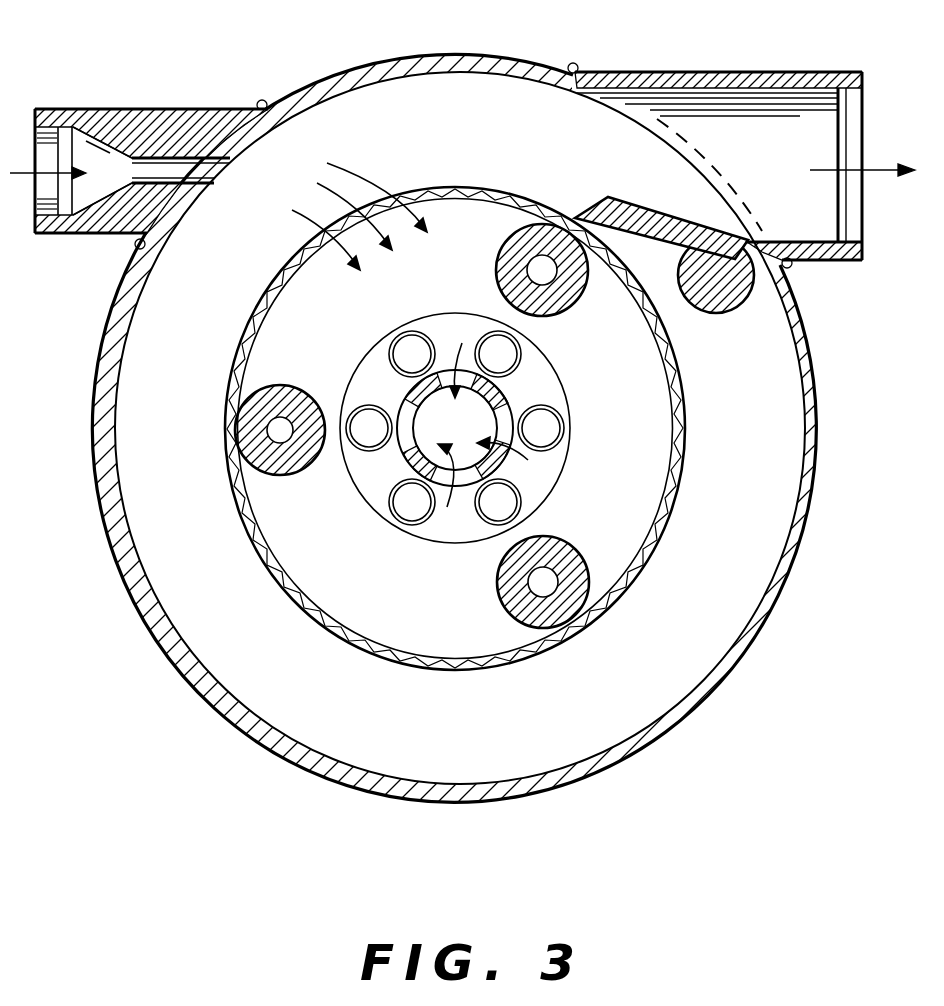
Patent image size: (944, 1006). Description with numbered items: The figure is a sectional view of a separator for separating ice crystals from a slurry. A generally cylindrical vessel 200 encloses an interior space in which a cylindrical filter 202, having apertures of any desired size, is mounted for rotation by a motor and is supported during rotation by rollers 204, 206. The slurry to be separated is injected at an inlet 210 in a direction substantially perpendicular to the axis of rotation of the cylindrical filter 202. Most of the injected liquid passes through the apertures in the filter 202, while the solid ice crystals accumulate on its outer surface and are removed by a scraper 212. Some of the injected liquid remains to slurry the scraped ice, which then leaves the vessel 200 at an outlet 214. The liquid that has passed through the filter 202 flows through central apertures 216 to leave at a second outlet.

The vessel 200 is at (454, 421).
The cylindrical filter 202 is at (489, 428).
The roller 204 is at (283, 478).
The roller 206 is at (625, 454).
The inlet 210 is at (177, 172).
The scraper 212 is at (623, 207).
The outlet 214 is at (783, 115).
The central apertures 216 is at (455, 428).